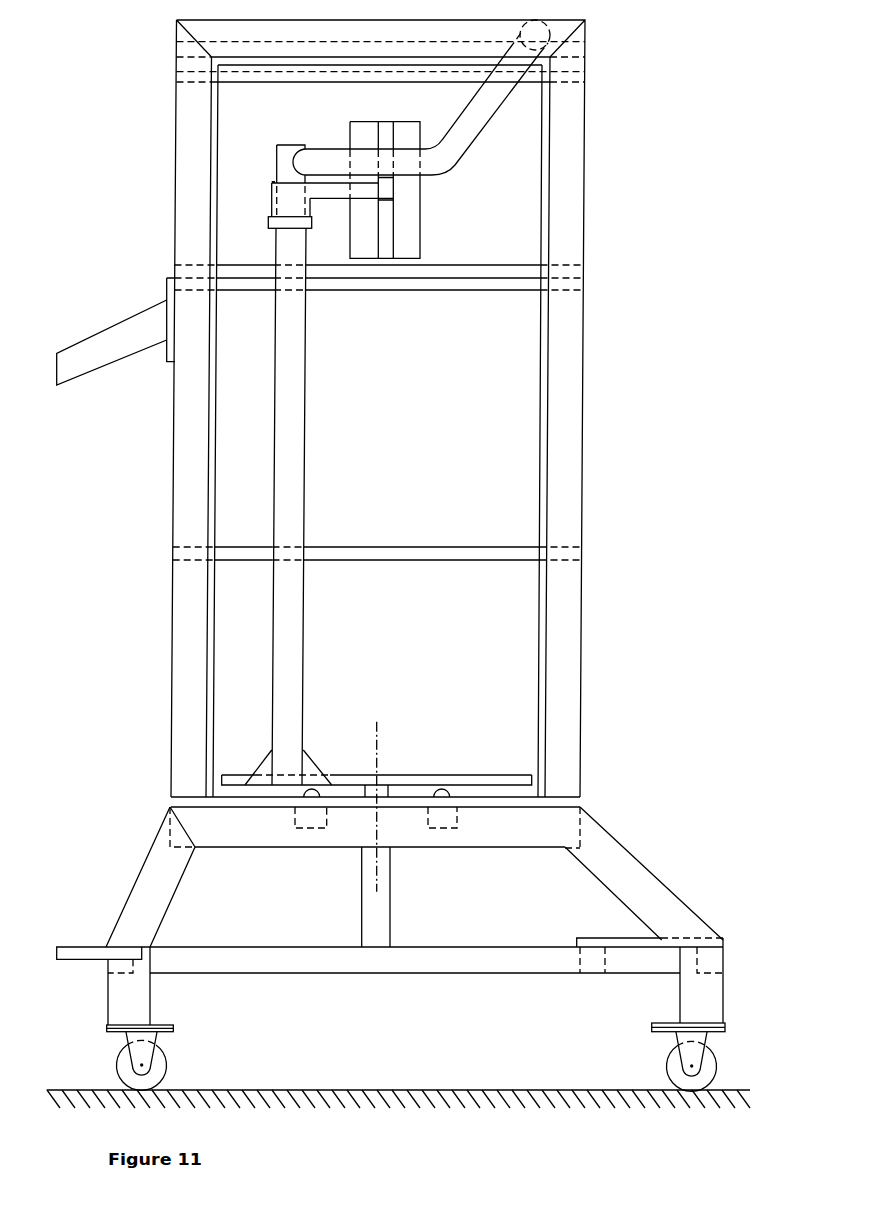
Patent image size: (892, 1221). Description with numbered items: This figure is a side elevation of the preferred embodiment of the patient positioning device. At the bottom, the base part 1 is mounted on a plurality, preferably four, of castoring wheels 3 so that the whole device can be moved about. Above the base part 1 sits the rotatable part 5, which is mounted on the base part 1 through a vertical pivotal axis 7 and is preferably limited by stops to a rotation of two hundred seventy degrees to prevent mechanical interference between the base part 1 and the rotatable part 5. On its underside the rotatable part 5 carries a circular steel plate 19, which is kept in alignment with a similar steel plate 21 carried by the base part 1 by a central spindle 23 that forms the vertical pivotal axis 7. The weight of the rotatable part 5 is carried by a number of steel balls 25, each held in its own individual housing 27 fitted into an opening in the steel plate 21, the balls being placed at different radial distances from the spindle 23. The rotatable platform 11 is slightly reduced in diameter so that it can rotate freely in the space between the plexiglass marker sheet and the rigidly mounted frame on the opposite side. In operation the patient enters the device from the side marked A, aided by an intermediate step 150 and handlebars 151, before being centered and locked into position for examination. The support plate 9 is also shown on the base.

The base part 1 is at (132, 867).
The castoring wheels 3 is at (128, 1065).
The rotatable part 5 is at (590, 777).
The vertical pivotal axis 7 is at (368, 723).
The support plate 9 is at (600, 937).
The rotatable platform 11 is at (232, 775).
The circular steel plate 19 is at (510, 775).
The steel plate 21 is at (500, 797).
The central spindle 23 is at (382, 795).
The steel balls 25 is at (307, 797).
The housing 27 is at (323, 828).
The intermediate step 150 is at (72, 960).
The handlebars 151 is at (92, 353).
The side marked A is at (159, 591).